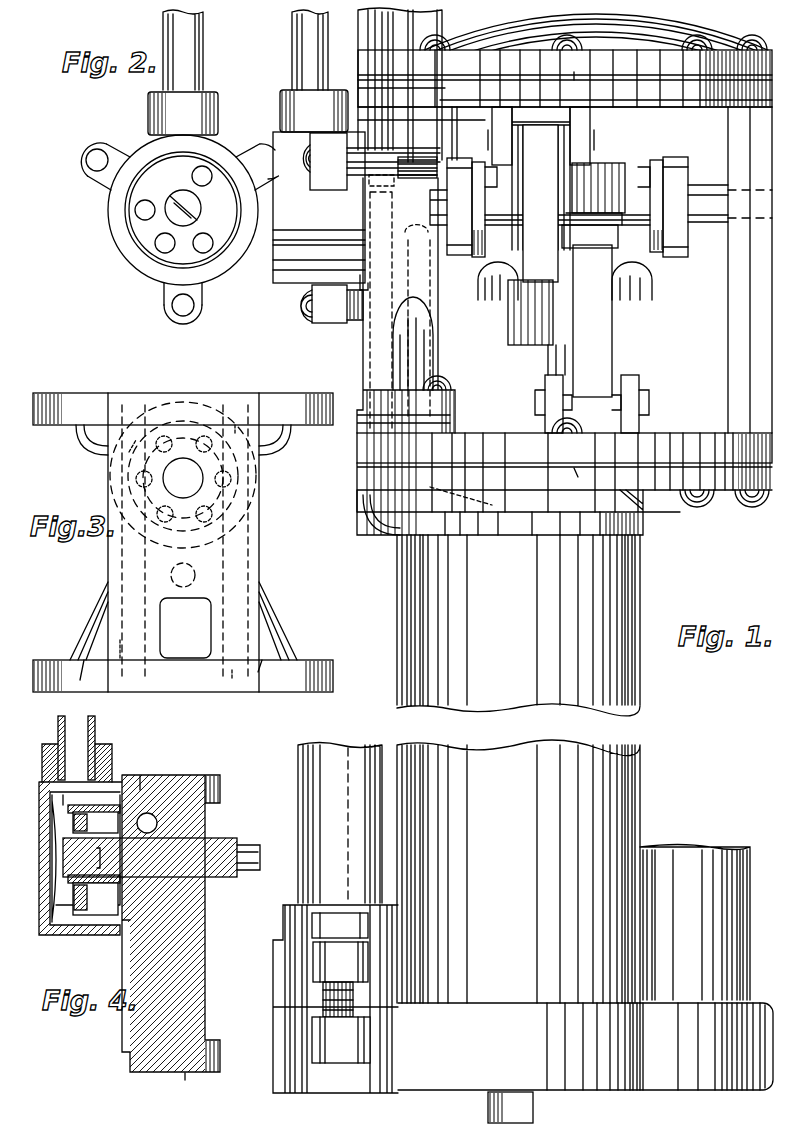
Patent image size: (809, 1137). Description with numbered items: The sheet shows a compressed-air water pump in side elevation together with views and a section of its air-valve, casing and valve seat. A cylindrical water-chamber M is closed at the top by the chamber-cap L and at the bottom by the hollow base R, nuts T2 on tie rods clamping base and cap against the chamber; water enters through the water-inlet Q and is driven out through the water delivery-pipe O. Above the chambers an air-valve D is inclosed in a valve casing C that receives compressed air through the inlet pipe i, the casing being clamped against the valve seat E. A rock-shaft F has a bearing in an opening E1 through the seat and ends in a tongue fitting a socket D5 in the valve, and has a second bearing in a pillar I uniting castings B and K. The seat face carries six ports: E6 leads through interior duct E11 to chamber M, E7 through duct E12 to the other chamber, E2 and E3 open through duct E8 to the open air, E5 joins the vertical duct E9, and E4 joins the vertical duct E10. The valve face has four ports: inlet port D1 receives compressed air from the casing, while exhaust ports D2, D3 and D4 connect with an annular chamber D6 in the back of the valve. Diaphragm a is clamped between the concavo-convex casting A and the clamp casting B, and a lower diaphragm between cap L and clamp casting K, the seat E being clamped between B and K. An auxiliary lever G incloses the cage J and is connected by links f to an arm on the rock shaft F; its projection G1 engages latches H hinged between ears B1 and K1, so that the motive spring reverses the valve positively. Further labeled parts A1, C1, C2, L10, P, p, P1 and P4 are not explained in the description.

In FIG. 1, the casting A is at (489, 440).
In FIG. 1, the column of top beam A1 is at (407, 85).
In FIG. 1, the diaphragm a is at (569, 68).
In FIG. 1, the clamp casting B is at (565, 102).
In FIG. 1, the ears B1 is at (541, 178).
In FIG. 2, the valve casing C is at (179, 229).
In FIG. 4, the valve casing C is at (80, 874).
In FIG. 1, the valve casing C is at (320, 211).
In FIG. 2, the casing collar C1 is at (183, 113).
In FIG. 4, the casing collar C1 is at (85, 757).
In FIG. 2, the casing lugs / fittings C2 is at (140, 232).
In FIG. 1, the casing lugs / fittings C2 is at (360, 206).
In FIG. 2, the air-valve D is at (194, 208).
In FIG. 4, the air-valve D is at (94, 837).
In FIG. 2, the inlet port D1 is at (165, 243).
In FIG. 4, the inlet port D1 is at (95, 899).
In FIG. 2, the exhaust port D2 is at (145, 210).
In FIG. 2, the exhaust port D3 is at (203, 243).
In FIG. 2, the exhaust port D4 is at (202, 176).
In FIG. 4, the exhaust port D4 is at (95, 822).
In FIG. 4, the socket D5 is at (86, 858).
In FIG. 4, the annular chamber D6 is at (80, 862).
In FIG. 3, the valve seat E is at (183, 542).
In FIG. 4, the valve seat E is at (172, 923).
In FIG. 1, the valve seat E is at (406, 356).
In FIG. 3, the opening E1 is at (183, 478).
In FIG. 3, the port E2 is at (164, 444).
In FIG. 3, the port E3 is at (204, 444).
In FIG. 3, the port E4 is at (144, 479).
In FIG. 3, the port E5 is at (223, 479).
In FIG. 4, the port E5 is at (147, 823).
In FIG. 1, the port E5 is at (381, 181).
In FIG. 3, the port E6 is at (165, 514).
In FIG. 3, the port E7 is at (204, 514).
In FIG. 3, the duct E8 is at (129, 443).
In FIG. 3, the vertical duct E9 is at (233, 542).
In FIG. 4, the vertical duct E9 is at (141, 926).
In FIG. 3, the vertical duct E10 is at (131, 663).
In FIG. 1, the vertical duct E10 is at (381, 311).
In FIG. 3, the interior duct E11 is at (92, 673).
In FIG. 1, the interior duct E11 is at (422, 322).
In FIG. 3, the duct E12 is at (269, 673).
In FIG. 4, the duct E12 is at (175, 1084).
In FIG. 4, the rock-shaft F is at (167, 857).
In FIG. 1, the rock-shaft F is at (601, 207).
In FIG. 1, the link f is at (567, 208).
In FIG. 1, the auxiliary lever G is at (486, 281).
In FIG. 1, the projection G1 is at (593, 205).
In FIG. 1, the latches H is at (567, 261).
In FIG. 1, the pillar I is at (750, 270).
In FIG. 2, the inlet pipe i is at (187, 49).
In FIG. 4, the inlet pipe i is at (80, 747).
In FIG. 1, the inlet pipe i is at (428, 252).
In FIG. 1, the cage J is at (580, 318).
In FIG. 1, the clamp casting K is at (564, 472).
In FIG. 1, the ears K1 is at (592, 404).
In FIG. 1, the chamber-cap L is at (564, 487).
In FIG. 1, the beam web L10 is at (451, 494).
In FIG. 1, the water-chamber M is at (518, 746).
In FIG. 1, the water delivery-pipe O is at (340, 823).
In FIG. 1, the pump housing P is at (335, 999).
In FIG. 1, the pump plunger p is at (340, 925).
In FIG. 1, the pump piston P1 is at (340, 979).
In FIG. 1, the pump lower piston P4 is at (341, 1040).
In FIG. 1, the water-inlet Q is at (695, 923).
In FIG. 1, the base R is at (585, 1046).
In FIG. 1, the nuts T2 is at (510, 1107).